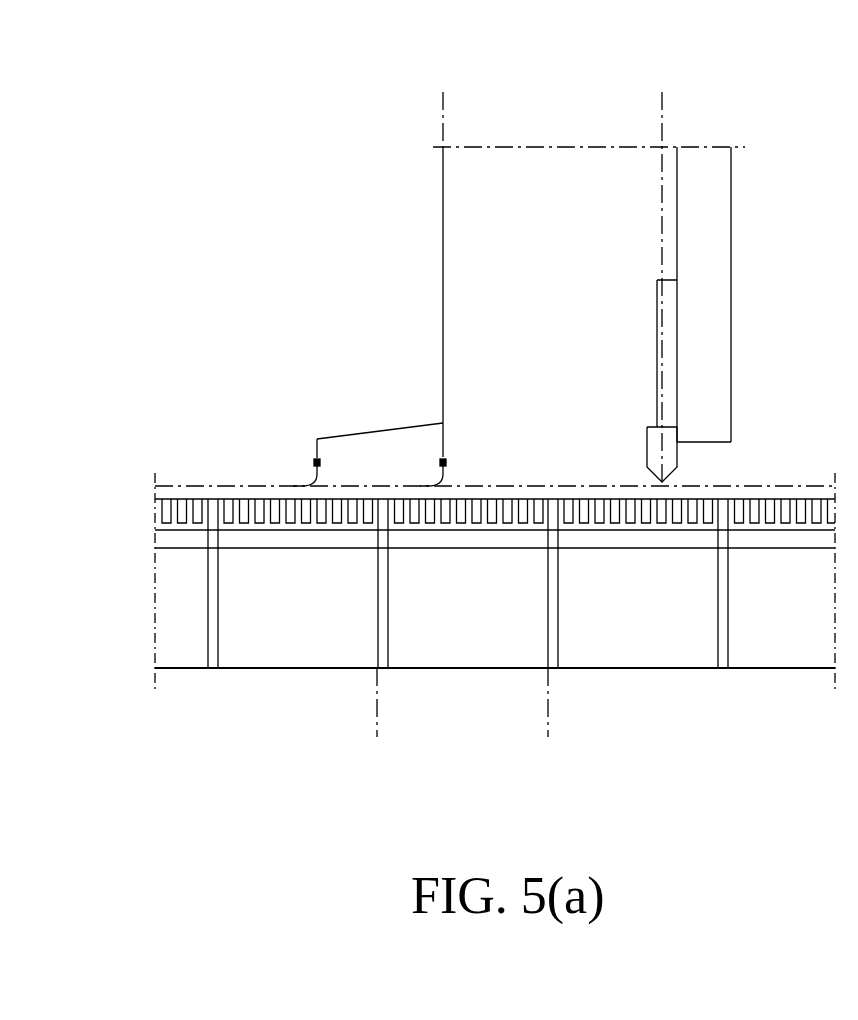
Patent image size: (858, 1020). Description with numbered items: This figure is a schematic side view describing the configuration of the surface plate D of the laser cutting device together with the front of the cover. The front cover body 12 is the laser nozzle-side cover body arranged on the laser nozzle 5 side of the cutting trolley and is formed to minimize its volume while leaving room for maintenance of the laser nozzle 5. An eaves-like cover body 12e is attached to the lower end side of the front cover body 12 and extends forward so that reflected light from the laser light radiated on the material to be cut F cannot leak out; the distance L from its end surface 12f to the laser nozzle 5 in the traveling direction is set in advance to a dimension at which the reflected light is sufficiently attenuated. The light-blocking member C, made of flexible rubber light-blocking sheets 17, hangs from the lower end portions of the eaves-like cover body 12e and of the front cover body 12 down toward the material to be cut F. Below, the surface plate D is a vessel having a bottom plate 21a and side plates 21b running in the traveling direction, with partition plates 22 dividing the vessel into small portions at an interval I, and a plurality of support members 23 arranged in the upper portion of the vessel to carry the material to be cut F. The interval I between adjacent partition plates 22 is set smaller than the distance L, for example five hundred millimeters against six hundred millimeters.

The front cover body 12 is at (440, 240).
The eaves-like cover body 12e is at (377, 428).
The end surface 12f is at (312, 457).
The light-blocking sheet 17 is at (307, 483).
The laser nozzle 5 is at (655, 442).
The support member 23 is at (572, 500).
The partition plate 22 is at (382, 610).
The bottom plate 21a is at (622, 667).
The side plate 21b is at (780, 627).
The distance L is at (660, 103).
The interval I is at (546, 722).
The light-blocking member C is at (265, 465).
The surface plate D is at (311, 712).
The material to be cut F is at (770, 498).